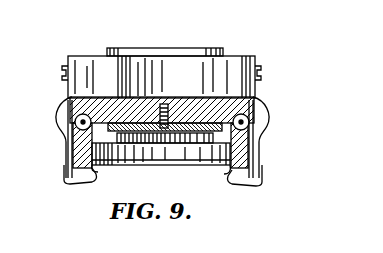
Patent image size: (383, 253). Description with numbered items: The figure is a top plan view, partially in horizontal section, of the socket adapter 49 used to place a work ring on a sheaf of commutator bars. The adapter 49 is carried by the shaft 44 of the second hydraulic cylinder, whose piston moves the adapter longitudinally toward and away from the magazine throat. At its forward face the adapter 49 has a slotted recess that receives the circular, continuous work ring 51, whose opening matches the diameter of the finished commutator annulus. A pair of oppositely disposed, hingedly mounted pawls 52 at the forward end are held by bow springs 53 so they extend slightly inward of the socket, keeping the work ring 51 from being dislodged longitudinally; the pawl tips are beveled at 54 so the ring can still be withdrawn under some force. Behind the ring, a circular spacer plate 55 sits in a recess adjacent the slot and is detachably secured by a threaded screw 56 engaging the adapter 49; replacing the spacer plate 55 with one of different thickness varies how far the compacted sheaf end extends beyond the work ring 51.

The shaft 44 is at (201, 48).
The socket adapter 49 is at (239, 70).
The work ring 51 is at (176, 162).
The pawls 52 is at (72, 181).
The bow springs 53 is at (60, 110).
The beveled tips 54 is at (100, 172).
The spacer plate 55 is at (180, 131).
The threaded screw 56 is at (174, 98).